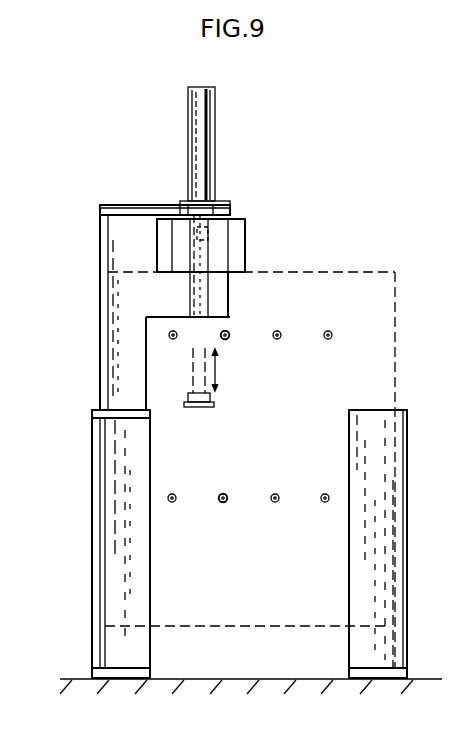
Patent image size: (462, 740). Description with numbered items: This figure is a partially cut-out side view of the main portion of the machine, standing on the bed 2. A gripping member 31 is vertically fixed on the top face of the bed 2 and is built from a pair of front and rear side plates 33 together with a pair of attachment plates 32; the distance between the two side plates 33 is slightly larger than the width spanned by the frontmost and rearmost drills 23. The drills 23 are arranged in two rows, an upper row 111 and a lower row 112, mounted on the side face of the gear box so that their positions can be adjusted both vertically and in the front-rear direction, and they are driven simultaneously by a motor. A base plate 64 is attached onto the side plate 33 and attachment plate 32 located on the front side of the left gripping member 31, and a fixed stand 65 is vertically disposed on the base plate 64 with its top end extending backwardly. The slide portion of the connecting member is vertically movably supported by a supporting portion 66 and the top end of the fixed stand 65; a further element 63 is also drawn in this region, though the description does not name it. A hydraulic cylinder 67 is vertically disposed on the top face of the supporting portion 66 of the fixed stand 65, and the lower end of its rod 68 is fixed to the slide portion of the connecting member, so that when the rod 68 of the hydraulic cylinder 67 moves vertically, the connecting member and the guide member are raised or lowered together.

The bed 2 is at (424, 684).
The drills 23 is at (328, 340).
The gripping member 31 is at (92, 523).
The attachment plate 32 is at (362, 594).
The side plate 33 is at (91, 582).
The drive rod 63 is at (198, 274).
The base plate 64 is at (93, 411).
The fixed stand 65 is at (108, 304).
The supporting portion 66 is at (223, 301).
The hydraulic cylinder 67 is at (214, 130).
The rod 68 is at (208, 232).
The upper row 111 is at (228, 339).
The lower row 112 is at (248, 485).